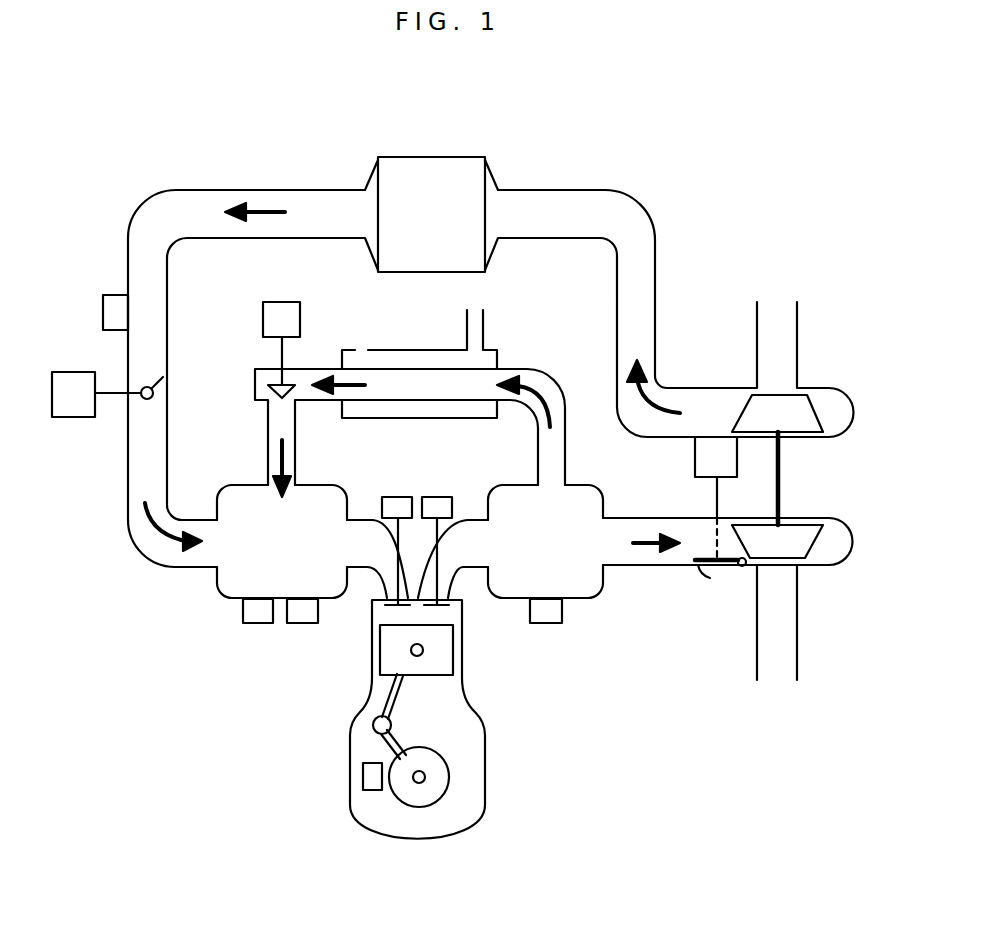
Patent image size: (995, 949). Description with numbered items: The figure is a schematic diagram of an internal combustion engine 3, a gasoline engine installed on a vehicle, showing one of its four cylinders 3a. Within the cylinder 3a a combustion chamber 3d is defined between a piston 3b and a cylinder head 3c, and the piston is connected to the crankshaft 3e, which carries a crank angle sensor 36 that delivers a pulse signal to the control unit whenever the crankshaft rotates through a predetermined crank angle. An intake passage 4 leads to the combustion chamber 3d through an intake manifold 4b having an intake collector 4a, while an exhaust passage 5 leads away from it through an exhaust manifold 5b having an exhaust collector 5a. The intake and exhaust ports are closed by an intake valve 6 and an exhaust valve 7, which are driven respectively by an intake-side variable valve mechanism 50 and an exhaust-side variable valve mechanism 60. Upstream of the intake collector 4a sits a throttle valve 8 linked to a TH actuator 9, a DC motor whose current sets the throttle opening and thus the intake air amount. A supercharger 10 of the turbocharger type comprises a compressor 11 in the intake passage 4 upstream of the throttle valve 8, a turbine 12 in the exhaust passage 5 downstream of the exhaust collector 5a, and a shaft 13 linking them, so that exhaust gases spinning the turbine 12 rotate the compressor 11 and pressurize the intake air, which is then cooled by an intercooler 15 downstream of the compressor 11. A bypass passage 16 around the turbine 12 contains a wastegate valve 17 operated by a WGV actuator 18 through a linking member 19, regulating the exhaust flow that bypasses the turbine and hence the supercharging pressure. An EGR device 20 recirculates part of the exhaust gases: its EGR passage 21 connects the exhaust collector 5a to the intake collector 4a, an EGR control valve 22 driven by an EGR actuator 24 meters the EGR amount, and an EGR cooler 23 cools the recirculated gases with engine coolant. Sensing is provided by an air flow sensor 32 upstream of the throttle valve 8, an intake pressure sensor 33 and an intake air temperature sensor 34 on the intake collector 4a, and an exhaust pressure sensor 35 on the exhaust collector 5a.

The internal combustion engine 3 is at (416, 719).
The cylinder 3a is at (480, 672).
The piston 3b is at (387, 663).
The cylinder head 3c is at (455, 600).
The combustion chamber 3d is at (373, 612).
The crankshaft 3e is at (425, 777).
The intake passage 4 is at (128, 487).
The intake collector 4a is at (327, 485).
The intake manifold 4b is at (357, 520).
The exhaust passage 5 is at (627, 567).
The exhaust collector 5a is at (520, 484).
The exhaust manifold 5b is at (480, 518).
The intake valve 6 is at (382, 578).
The exhaust valve 7 is at (470, 573).
The throttle valve 8 is at (141, 399).
The TH actuator 9 is at (78, 372).
The supercharger 10 is at (816, 447).
The compressor 11 is at (800, 410).
The turbine 12 is at (800, 545).
The shaft 13 is at (782, 480).
The intercooler 15 is at (435, 157).
The bypass passage 16 is at (746, 566).
The wastegate valve 17 is at (707, 567).
The WGV actuator 18 is at (737, 470).
The linking member 19 is at (717, 490).
The EGR device 20 is at (415, 381).
The EGR passage 21 is at (556, 372).
The EGR control valve 22 is at (270, 400).
The EGR cooler 23 is at (400, 350).
The EGR actuator 24 is at (263, 316).
The air flow sensor 32 is at (103, 300).
The intake pressure sensor 33 is at (255, 623).
The intake air temperature sensor 34 is at (300, 623).
The exhaust pressure sensor 35 is at (550, 623).
The crank angle sensor 36 is at (363, 778).
The intake-side variable valve mechanism 50 is at (397, 497).
The exhaust-side variable valve mechanism 60 is at (437, 497).